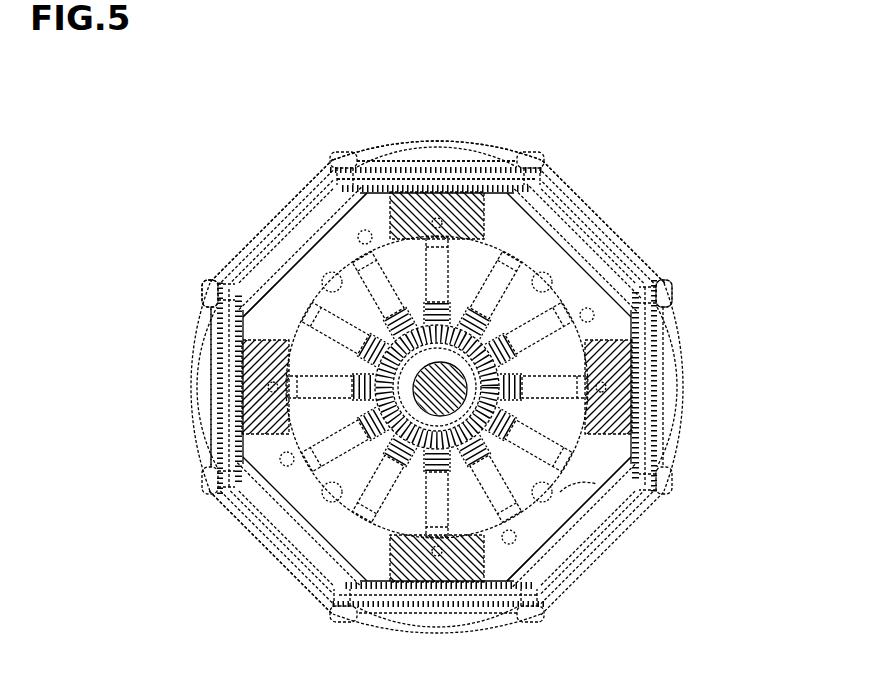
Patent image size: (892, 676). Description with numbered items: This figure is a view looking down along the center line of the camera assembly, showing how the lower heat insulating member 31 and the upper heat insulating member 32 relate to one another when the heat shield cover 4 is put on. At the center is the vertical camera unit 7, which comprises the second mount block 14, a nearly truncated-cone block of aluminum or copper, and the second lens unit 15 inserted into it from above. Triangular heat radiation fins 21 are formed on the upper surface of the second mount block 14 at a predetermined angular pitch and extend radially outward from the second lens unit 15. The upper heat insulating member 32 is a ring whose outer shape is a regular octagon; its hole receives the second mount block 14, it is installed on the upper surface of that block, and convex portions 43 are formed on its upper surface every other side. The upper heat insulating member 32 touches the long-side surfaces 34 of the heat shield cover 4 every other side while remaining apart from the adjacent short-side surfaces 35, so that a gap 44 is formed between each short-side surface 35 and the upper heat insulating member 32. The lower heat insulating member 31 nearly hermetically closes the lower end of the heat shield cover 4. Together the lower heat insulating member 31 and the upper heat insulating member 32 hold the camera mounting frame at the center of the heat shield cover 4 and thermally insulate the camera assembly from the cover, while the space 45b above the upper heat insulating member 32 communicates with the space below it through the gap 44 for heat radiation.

The heat shield cover 4 is at (625, 262).
The vertical camera unit 7 is at (212, 402).
The second mount block 14 is at (292, 590).
The second lens unit 15 is at (550, 532).
The heat radiation fins 21 is at (370, 495).
The lower heat insulating member 31 is at (482, 148).
The upper heat insulating member 32 is at (572, 247).
The long-side surface 34 is at (457, 146).
The short-side surface 35 is at (292, 200).
The convex portions 43 is at (222, 282).
The gap 44 is at (315, 230).
The space 45b is at (570, 463).